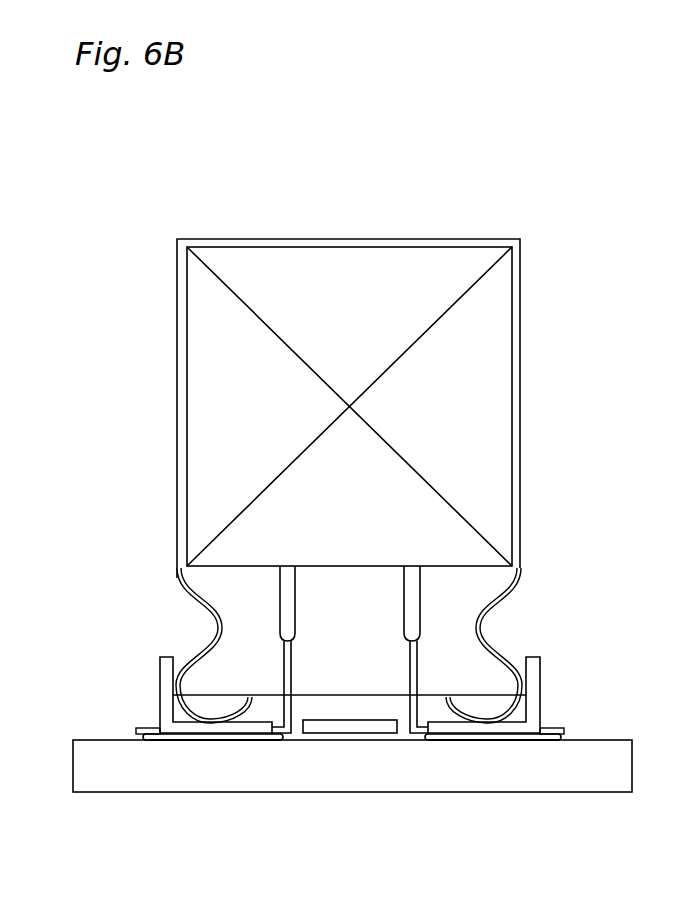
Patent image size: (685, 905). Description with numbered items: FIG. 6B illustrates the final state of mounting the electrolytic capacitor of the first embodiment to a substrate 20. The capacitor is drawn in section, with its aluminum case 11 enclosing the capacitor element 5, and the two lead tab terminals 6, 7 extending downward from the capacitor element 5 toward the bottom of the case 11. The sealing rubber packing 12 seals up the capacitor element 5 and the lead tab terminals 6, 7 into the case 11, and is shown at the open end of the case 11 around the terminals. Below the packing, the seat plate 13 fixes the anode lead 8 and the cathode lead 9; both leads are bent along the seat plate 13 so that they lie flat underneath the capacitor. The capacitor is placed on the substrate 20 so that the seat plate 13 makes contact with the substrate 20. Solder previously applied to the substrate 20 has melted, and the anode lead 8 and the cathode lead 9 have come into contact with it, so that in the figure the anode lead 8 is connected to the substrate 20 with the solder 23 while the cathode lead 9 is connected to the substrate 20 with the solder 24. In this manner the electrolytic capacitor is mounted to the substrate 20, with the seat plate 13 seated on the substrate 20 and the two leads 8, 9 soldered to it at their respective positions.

The capacitor element 5 is at (200, 405).
The case 11 is at (520, 418).
The lead tab terminal 6 is at (280, 602).
The lead tab terminal 7 is at (420, 607).
The sealing rubber packing 12 is at (458, 650).
The seat plate 13 is at (160, 661).
The anode lead 8 is at (138, 732).
The cathode lead 9 is at (562, 731).
The substrate 20 is at (620, 765).
The solder 23 is at (218, 741).
The solder 24 is at (496, 741).